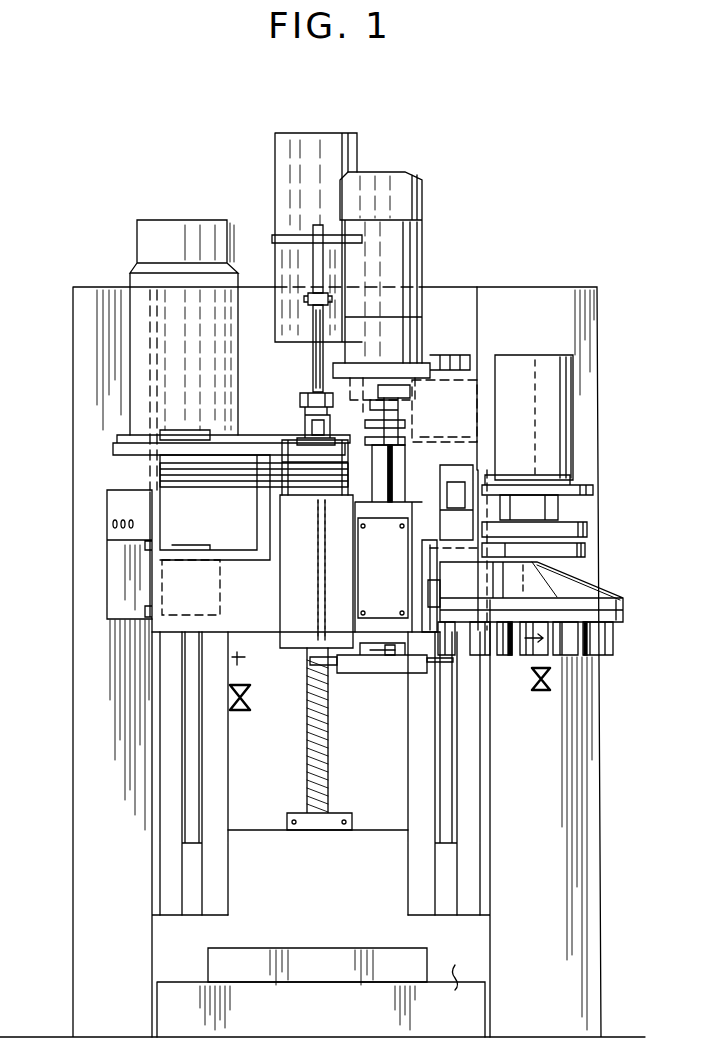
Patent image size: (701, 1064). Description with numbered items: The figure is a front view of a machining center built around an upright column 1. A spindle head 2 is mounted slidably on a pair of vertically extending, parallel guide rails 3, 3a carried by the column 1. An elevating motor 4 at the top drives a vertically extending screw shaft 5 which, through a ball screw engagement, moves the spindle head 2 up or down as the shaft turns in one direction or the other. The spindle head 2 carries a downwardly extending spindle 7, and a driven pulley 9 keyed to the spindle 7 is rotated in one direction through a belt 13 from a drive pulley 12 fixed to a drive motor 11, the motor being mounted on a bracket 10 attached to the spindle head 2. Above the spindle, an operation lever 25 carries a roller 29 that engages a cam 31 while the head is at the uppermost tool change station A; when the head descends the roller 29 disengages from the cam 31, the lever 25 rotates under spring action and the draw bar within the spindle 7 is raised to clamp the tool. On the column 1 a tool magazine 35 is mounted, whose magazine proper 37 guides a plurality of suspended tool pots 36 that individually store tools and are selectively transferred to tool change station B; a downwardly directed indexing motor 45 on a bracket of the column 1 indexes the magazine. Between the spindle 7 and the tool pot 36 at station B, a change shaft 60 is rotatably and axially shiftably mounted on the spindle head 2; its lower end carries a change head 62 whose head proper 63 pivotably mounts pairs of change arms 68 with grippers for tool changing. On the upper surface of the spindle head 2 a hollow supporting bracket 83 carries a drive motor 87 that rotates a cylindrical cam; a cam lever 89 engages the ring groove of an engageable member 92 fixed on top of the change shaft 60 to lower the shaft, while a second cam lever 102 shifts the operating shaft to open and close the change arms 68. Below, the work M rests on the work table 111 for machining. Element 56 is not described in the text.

The column 1 is at (588, 312).
The spindle head 2 is at (300, 592).
The guide rail 3 is at (190, 770).
The guide rail 3a is at (448, 812).
The elevating motor 4 is at (358, 142).
The screw shaft 5 is at (328, 757).
The spindle 7 is at (308, 418).
The driven pulley 9 is at (308, 478).
The bracket 10 is at (113, 450).
The drive motor 11 is at (135, 352).
The drive pulley 12 is at (160, 490).
The belt 13 is at (237, 488).
The operation lever 25 is at (312, 352).
The roller 29 is at (315, 295).
The cam 31 is at (318, 245).
The tool magazine 35 is at (567, 512).
The tool pot 36 is at (613, 640).
The magazine proper 37 is at (600, 580).
The indexing motor 45 is at (573, 395).
The block 56 is at (462, 482).
The change shaft 60 is at (362, 498).
The change head 62 is at (397, 668).
The head proper 63 is at (365, 674).
The change arm 68 is at (320, 665).
The supporting bracket 83 is at (400, 455).
The drive motor 87 is at (410, 230).
The cam lever 89 is at (400, 425).
The engageable member 92 is at (395, 408).
The cam lever 102 is at (405, 363).
The work table 111 is at (463, 960).
The tool change station A is at (317, 678).
The tool change station B is at (448, 676).
The work M is at (218, 958).